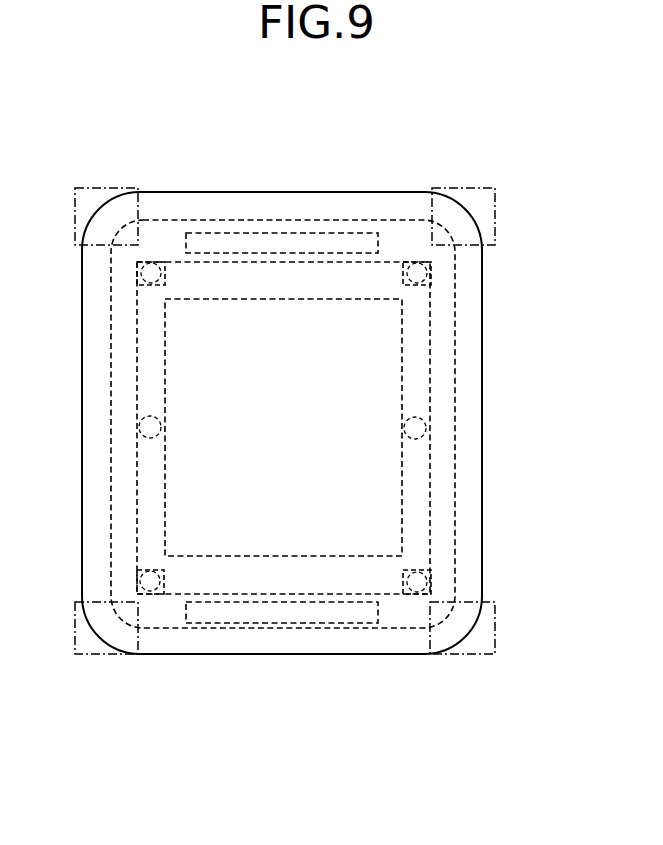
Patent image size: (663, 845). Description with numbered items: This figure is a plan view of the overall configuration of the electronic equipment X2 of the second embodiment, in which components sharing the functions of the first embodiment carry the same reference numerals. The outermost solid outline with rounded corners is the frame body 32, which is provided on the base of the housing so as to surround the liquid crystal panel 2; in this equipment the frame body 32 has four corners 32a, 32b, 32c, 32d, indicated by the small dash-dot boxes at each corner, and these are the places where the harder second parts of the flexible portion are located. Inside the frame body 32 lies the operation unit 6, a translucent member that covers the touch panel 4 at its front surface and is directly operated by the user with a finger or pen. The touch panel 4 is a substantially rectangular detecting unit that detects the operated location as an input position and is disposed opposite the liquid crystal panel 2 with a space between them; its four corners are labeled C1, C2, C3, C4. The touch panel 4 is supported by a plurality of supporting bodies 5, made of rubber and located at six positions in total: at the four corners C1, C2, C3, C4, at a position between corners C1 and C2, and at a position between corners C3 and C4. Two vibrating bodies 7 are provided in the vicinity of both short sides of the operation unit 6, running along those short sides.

The electronic equipment X2 is at (499, 122).
The frame body 32 is at (482, 333).
The corner of the frame body 32a is at (108, 188).
The corner of the frame body 32b is at (105, 660).
The corner of the frame body 32c is at (458, 188).
The corner of the frame body 32d is at (462, 660).
The operation unit 6 is at (179, 199).
The touch panel 4 is at (418, 380).
The liquid crystal panel 2 is at (387, 492).
The vibrating body 7 is at (290, 245).
The supporting body 5 is at (137, 275).
The corner of the touch panel C1 is at (150, 264).
The corner of the touch panel C2 is at (158, 582).
The corner of the touch panel C3 is at (416, 264).
The corner of the touch panel C4 is at (418, 582).